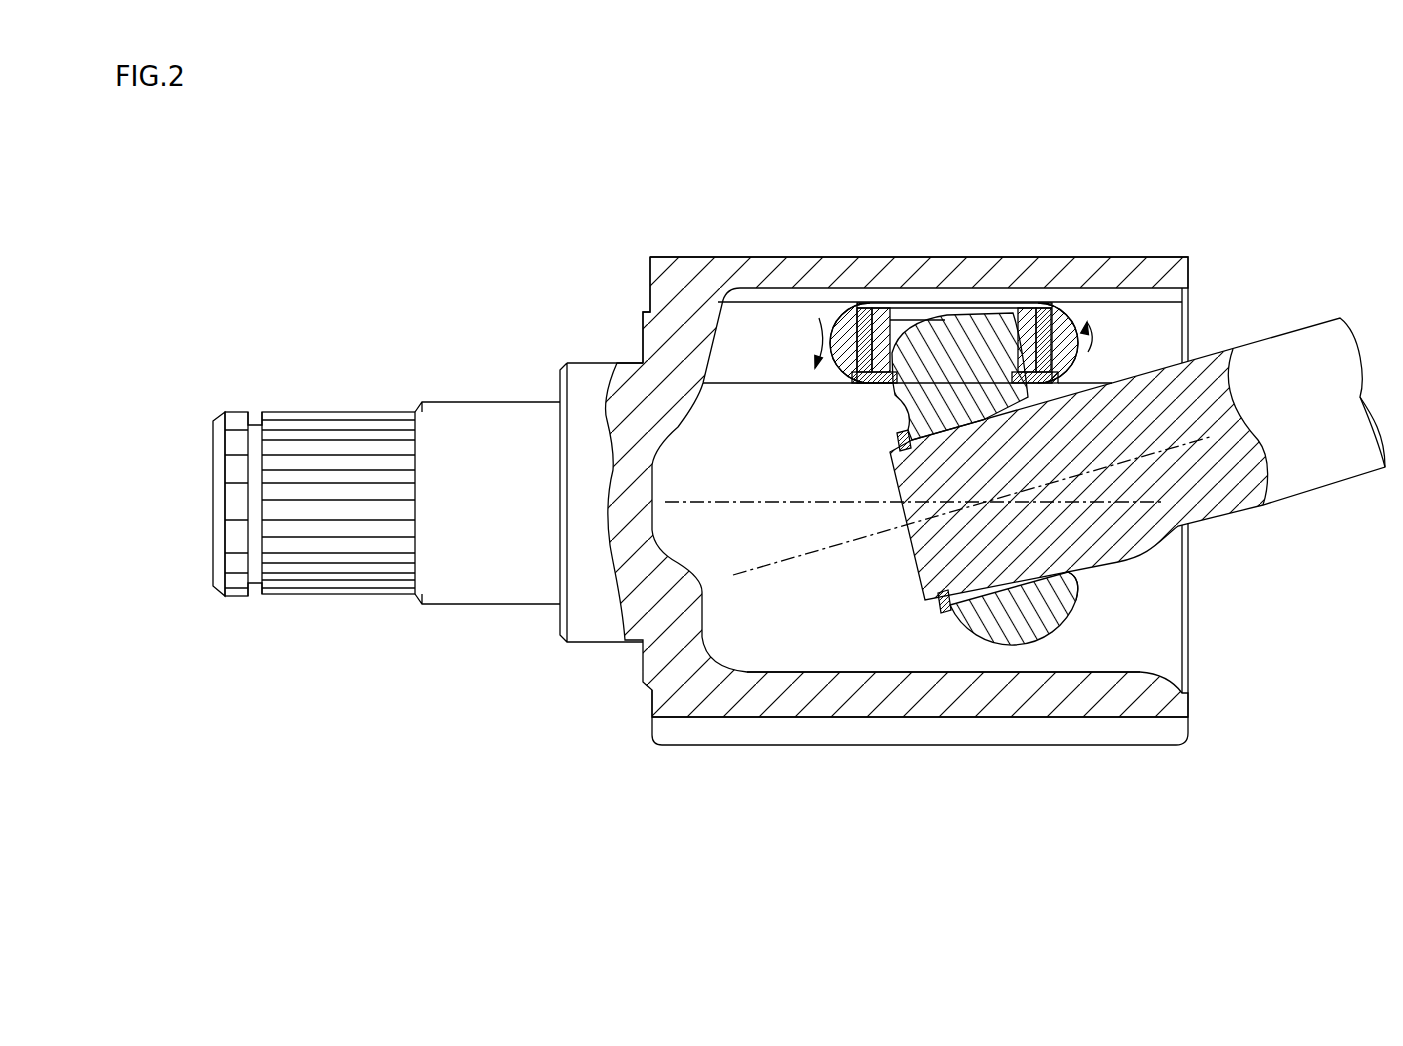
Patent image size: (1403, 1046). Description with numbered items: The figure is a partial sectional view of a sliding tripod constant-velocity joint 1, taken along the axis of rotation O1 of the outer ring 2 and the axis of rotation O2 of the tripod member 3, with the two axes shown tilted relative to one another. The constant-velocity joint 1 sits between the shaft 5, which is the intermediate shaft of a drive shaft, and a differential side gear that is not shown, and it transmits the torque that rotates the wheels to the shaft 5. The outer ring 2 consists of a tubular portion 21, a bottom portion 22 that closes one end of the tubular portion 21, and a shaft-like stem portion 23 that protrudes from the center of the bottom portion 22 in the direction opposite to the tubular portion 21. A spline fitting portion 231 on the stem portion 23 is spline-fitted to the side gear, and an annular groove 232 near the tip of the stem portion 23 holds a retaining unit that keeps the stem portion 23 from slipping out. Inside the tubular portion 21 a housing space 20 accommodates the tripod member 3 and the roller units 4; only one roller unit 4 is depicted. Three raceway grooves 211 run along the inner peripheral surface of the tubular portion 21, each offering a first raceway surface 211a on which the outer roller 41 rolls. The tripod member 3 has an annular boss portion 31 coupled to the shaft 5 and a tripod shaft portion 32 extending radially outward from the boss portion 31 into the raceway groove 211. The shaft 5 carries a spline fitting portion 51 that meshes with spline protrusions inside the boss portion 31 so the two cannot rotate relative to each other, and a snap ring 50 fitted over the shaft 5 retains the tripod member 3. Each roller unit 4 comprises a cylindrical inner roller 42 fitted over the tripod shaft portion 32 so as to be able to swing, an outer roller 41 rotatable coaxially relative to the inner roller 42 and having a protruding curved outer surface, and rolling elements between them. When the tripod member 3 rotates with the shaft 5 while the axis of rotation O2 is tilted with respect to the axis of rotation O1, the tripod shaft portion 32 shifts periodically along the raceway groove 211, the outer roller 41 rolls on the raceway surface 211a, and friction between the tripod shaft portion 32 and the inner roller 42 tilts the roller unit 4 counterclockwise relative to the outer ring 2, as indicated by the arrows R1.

The constant-velocity joint 1 is at (592, 195).
The outer ring 2 is at (1150, 748).
The housing space 20 is at (822, 647).
The tubular portion 21 is at (688, 253).
The raceway groove 211 is at (737, 350).
The first raceway surface 211a is at (810, 375).
The bottom portion 22 is at (642, 337).
The stem portion 23 is at (303, 360).
The spline fitting portion 231 is at (383, 593).
The annular groove 232 is at (253, 582).
The tripod member 3 is at (983, 647).
The boss portion 31 is at (1022, 633).
The tripod shaft portion 32 is at (930, 343).
The roller unit 4 is at (1105, 322).
The outer roller 41 is at (1053, 308).
The inner roller 42 is at (1030, 312).
The shaft 5 is at (1298, 498).
The snap ring 50 is at (940, 607).
The spline fitting portion 51 is at (1072, 600).
The direction of tilt R1 is at (1215, 315).
The axis of rotation of the outer ring O1 is at (707, 502).
The axis of rotation of the tripod member O2 is at (852, 545).